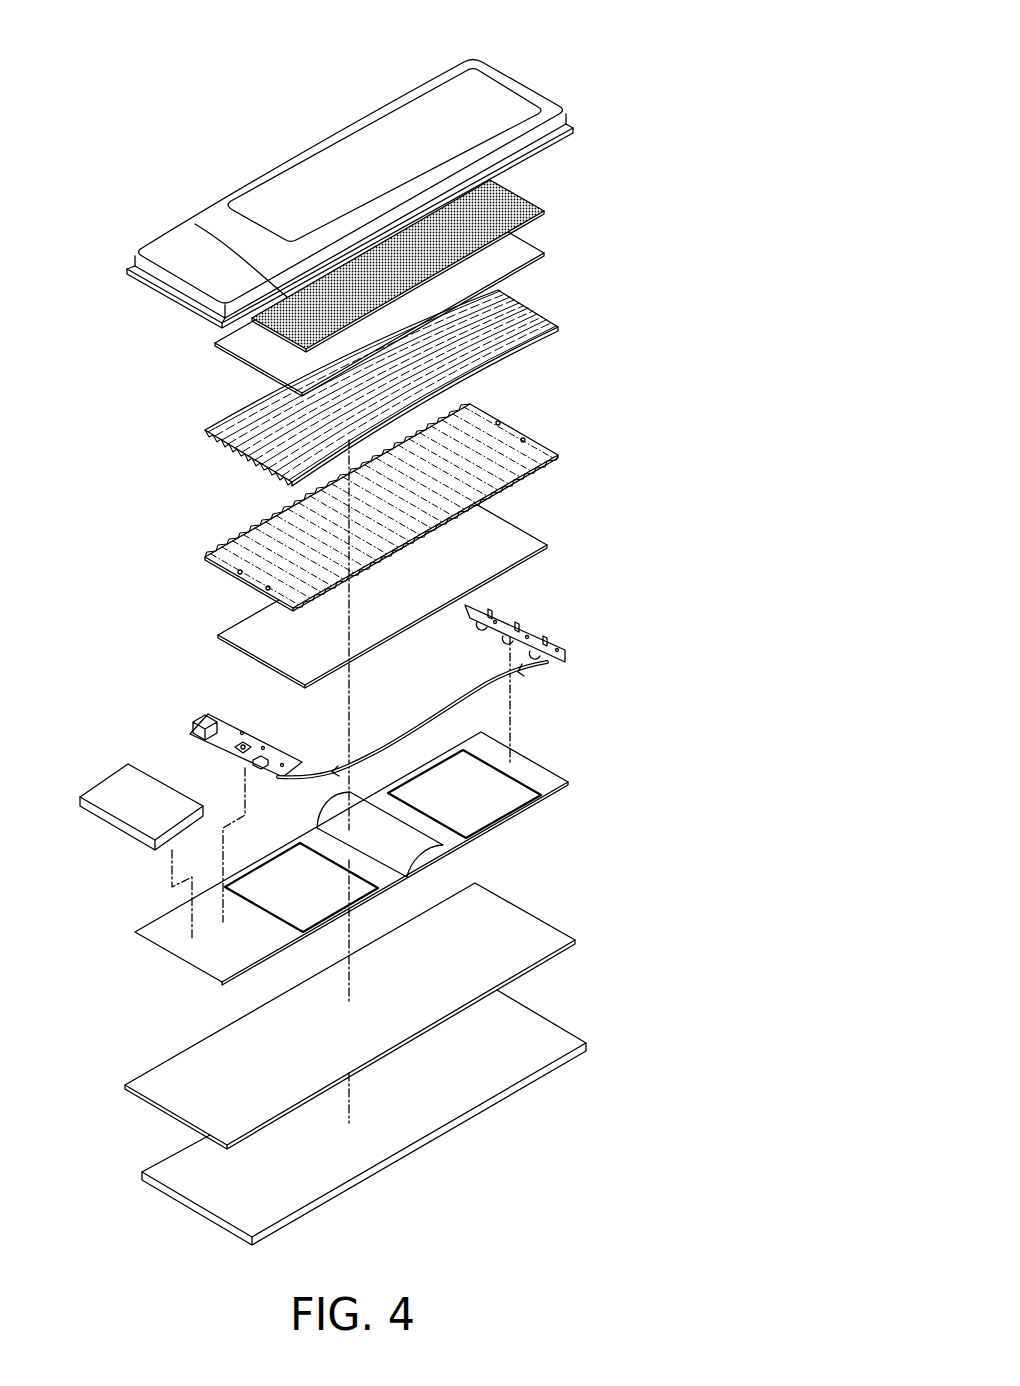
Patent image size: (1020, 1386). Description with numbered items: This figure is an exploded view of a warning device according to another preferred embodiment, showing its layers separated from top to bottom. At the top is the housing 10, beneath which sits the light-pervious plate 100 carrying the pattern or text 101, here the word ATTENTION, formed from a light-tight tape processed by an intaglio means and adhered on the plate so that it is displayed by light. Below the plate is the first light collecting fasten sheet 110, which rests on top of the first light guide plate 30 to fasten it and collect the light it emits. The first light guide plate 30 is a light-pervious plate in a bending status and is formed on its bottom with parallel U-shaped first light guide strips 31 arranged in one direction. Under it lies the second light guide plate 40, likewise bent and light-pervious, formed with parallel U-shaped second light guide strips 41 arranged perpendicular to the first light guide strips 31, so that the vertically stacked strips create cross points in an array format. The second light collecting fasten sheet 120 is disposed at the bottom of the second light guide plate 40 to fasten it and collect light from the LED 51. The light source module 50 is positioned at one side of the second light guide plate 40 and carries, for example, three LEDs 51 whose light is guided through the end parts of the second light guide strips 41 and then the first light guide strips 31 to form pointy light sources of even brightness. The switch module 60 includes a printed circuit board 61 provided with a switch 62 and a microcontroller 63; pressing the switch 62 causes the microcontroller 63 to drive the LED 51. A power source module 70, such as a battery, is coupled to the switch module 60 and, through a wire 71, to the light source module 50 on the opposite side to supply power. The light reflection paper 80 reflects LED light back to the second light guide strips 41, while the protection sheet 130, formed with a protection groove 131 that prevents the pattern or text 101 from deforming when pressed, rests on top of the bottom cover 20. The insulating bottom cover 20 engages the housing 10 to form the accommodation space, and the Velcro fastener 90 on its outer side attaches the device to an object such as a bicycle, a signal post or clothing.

The housing 10 is at (522, 82).
The pattern or text 101 is at (195, 224).
The light-pervious plate 100 is at (510, 181).
The first light collecting fasten sheet 110 is at (522, 258).
The first light guide plate 30 is at (385, 357).
The first light guide strips 31 is at (228, 453).
The second light guide plate 40 is at (433, 476).
The second light guide strips 41 is at (512, 477).
The second light collecting fasten sheet 120 is at (507, 538).
The light source module 50 is at (538, 599).
The LED 51 is at (518, 615).
The switch module 60 is at (251, 763).
The printed circuit board 61 is at (257, 744).
The switch 62 is at (228, 748).
The microcontroller 63 is at (248, 766).
The power source module 70 is at (127, 790).
The wire 71 is at (447, 707).
The light reflection paper 80 is at (483, 777).
The protection sheet 130 is at (387, 827).
The protection groove 131 is at (410, 835).
The bottom cover 20 is at (517, 919).
The Velcro fastener 90 is at (500, 1067).